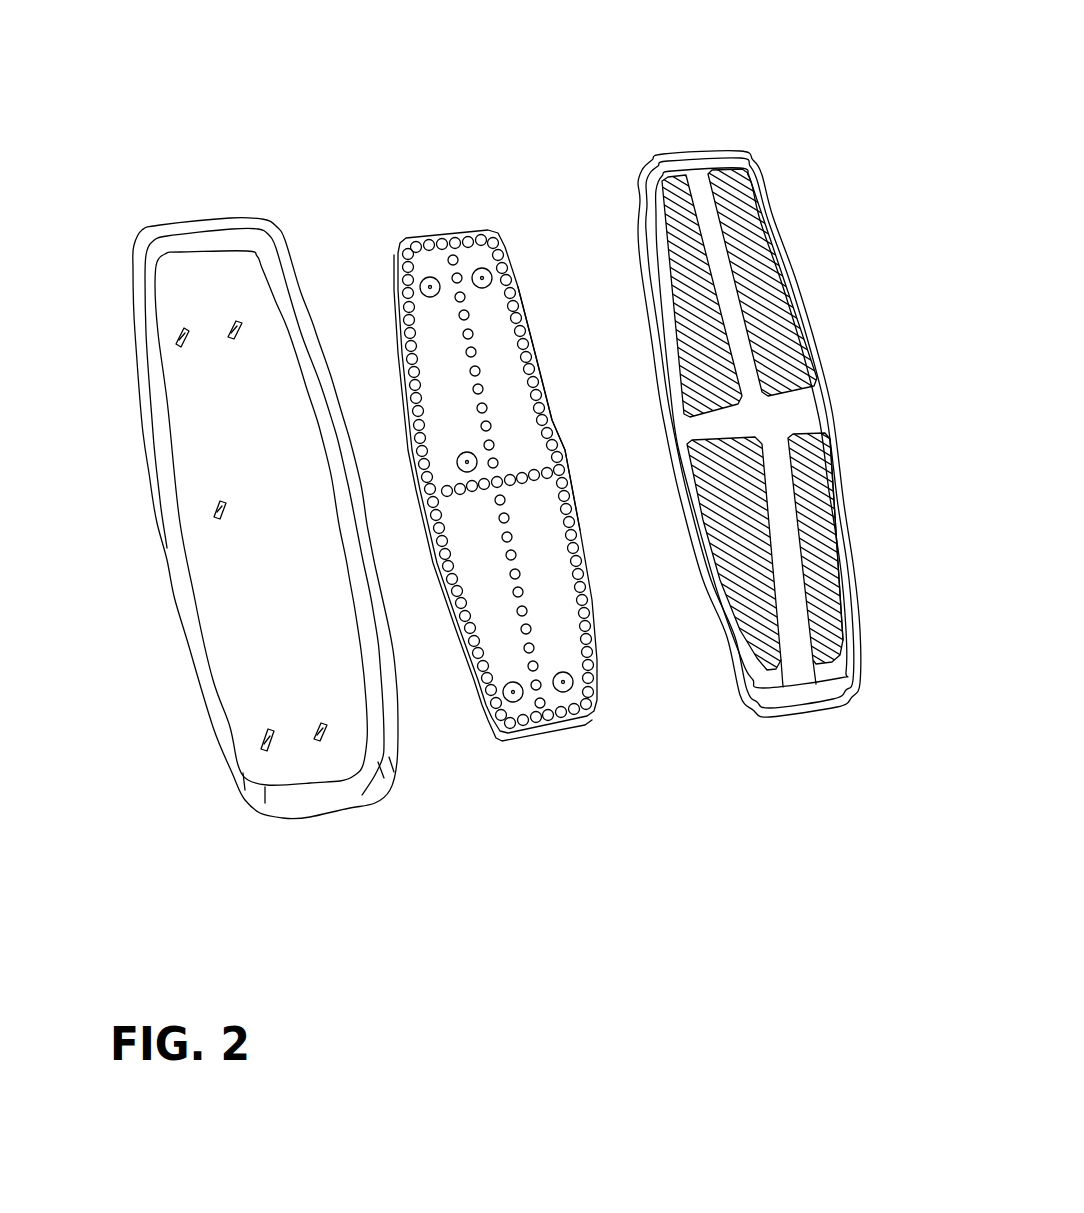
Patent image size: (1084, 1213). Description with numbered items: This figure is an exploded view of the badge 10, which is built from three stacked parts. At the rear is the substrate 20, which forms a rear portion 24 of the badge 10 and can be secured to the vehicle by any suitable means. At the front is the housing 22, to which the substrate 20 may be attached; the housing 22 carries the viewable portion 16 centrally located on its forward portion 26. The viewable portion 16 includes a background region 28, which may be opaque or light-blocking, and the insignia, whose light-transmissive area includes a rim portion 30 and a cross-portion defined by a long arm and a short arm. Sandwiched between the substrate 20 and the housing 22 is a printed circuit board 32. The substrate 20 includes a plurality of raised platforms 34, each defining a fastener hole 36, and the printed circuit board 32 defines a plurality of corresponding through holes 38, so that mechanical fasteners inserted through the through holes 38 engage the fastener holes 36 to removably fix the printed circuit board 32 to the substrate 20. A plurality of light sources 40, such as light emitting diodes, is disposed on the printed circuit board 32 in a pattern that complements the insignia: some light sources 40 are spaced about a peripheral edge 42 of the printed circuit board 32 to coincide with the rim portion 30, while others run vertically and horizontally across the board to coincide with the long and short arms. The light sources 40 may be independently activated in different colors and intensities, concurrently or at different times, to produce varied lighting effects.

The badge 10 is at (742, 92).
The viewable portion 16 is at (777, 453).
The substrate 20 is at (243, 608).
The housing 22 is at (820, 386).
The rear portion 24 is at (252, 820).
The forward portion 26 is at (792, 366).
The background region 28 is at (805, 487).
The rim portion 30 is at (800, 620).
The printed circuit board 32 is at (515, 491).
The raised platform 34 is at (174, 338).
The fastener hole 36 is at (180, 330).
The through hole 38 is at (430, 286).
The light source 40 is at (567, 721).
The peripheral edge 42 is at (567, 472).